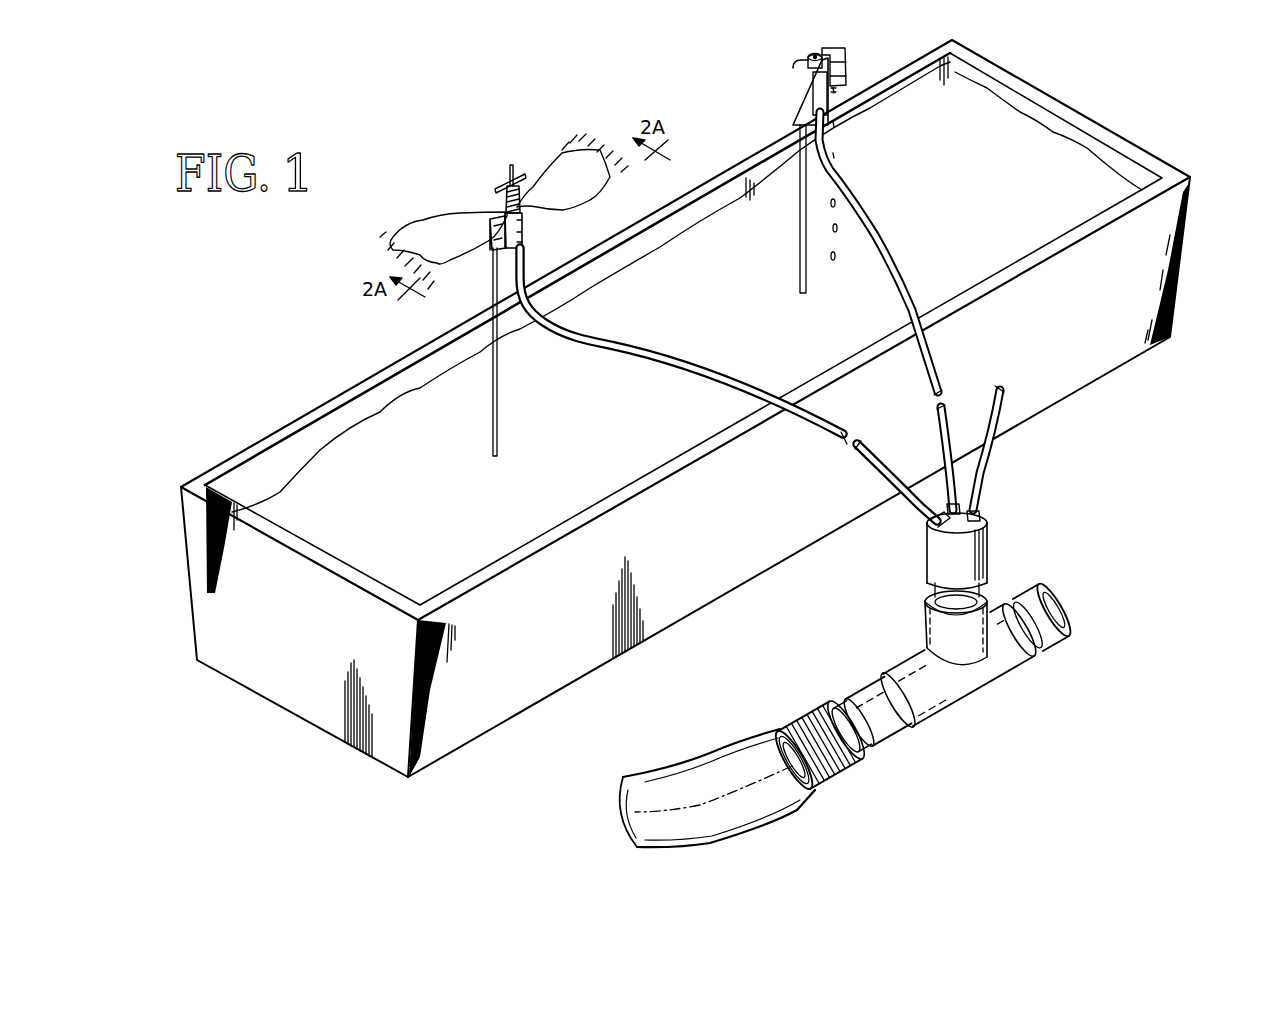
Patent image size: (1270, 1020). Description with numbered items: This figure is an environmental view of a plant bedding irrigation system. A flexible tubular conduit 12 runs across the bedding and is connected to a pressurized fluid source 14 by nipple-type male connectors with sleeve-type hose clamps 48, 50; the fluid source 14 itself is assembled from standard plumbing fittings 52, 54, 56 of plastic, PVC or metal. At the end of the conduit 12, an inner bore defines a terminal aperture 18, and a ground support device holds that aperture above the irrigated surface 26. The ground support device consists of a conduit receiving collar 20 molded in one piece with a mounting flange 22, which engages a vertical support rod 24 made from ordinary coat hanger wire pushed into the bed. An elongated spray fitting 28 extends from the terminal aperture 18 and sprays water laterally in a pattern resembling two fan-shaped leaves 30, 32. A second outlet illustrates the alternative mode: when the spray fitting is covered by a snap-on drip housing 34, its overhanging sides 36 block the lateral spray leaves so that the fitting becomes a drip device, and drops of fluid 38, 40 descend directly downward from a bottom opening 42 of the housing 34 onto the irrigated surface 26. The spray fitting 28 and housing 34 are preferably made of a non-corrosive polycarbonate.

The tubular conduit 12 is at (656, 352).
The pressurized fluid source 14 is at (988, 560).
The terminal aperture 18 is at (506, 212).
The conduit receiving collar 20 is at (522, 236).
The mounting flange 22 is at (490, 240).
The vertical support rod 24 is at (498, 425).
The irrigated surface 26 is at (448, 515).
The spray fitting 28 is at (522, 203).
The fan-shaped leaf 30 is at (465, 246).
The fan-shaped leaf 32 is at (578, 193).
The drip housing 34 is at (830, 50).
The overhanging sides 36 is at (848, 75).
The drop of fluid 38 is at (836, 103).
The drop of fluid 40 is at (840, 157).
The bottom opening 42 is at (835, 87).
The hose clamp 48 is at (928, 530).
The hose clamp 50 is at (985, 530).
The plumbing fitting 52 is at (928, 562).
The plumbing fitting 54 is at (990, 682).
The plumbing fitting 56 is at (860, 762).